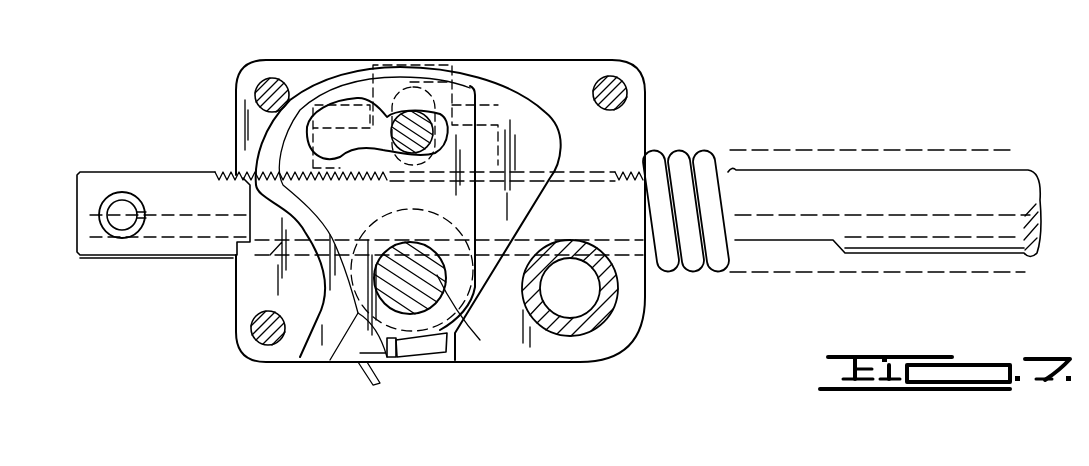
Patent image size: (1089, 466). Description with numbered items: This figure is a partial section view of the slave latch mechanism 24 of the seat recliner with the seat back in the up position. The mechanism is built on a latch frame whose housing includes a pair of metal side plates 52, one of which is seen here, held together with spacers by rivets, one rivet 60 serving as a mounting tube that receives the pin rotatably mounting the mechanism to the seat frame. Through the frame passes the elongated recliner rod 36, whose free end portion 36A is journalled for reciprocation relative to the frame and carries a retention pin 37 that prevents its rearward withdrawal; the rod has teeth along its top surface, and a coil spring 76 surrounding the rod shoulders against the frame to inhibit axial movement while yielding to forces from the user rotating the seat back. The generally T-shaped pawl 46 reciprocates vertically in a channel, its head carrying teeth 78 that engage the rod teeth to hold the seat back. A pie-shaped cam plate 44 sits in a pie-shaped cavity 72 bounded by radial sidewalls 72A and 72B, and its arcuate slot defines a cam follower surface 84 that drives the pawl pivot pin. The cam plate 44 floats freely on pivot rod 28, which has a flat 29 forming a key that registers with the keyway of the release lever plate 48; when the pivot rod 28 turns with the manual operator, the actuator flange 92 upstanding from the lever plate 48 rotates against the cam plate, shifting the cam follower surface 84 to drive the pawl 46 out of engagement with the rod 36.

The slave latch mechanism 24 is at (187, 297).
The pivot rod 28 is at (456, 330).
The flat 29 is at (470, 294).
The recliner rod 36 is at (883, 178).
The free end portion 36A is at (158, 181).
The retention pin 37 is at (112, 195).
The cam plate 44 is at (471, 86).
The pawl 46 is at (485, 130).
The release lever plate 48 is at (410, 362).
The side plate 52 is at (612, 58).
The rivet 60 is at (622, 303).
The pie-shaped cavity 72 is at (547, 143).
The radial sidewall 72A is at (533, 206).
The radial sidewall 72B is at (293, 203).
The coil spring 76 is at (681, 155).
The teeth 78 is at (328, 182).
The cam follower surface 84 is at (380, 135).
The actuator flange 92 is at (441, 352).